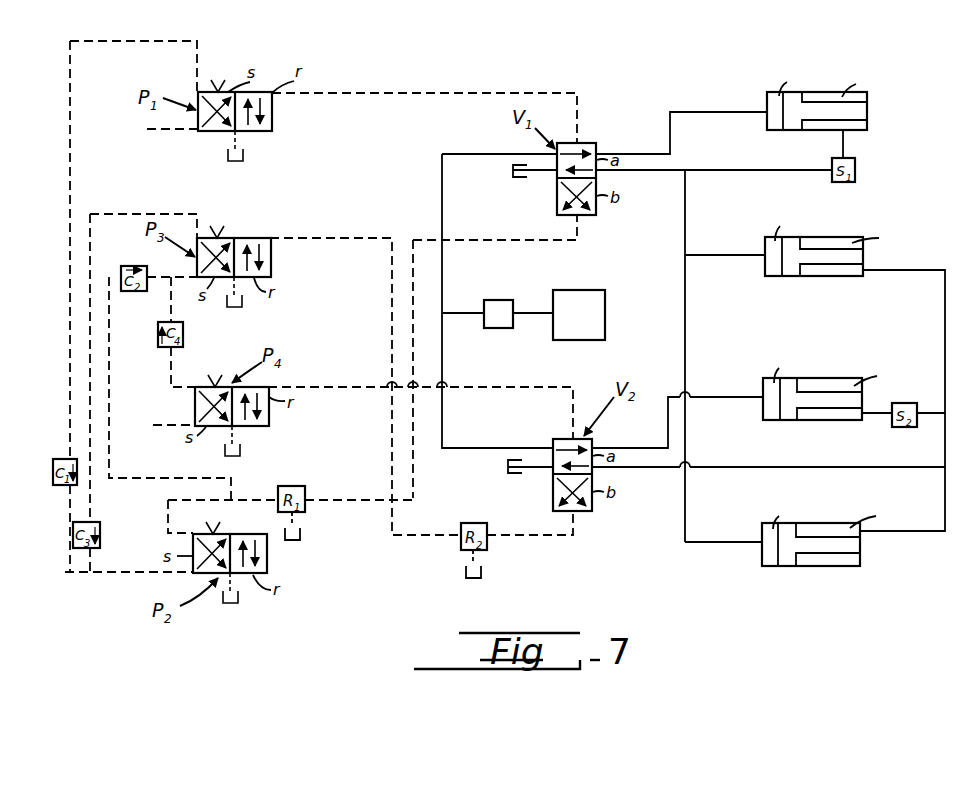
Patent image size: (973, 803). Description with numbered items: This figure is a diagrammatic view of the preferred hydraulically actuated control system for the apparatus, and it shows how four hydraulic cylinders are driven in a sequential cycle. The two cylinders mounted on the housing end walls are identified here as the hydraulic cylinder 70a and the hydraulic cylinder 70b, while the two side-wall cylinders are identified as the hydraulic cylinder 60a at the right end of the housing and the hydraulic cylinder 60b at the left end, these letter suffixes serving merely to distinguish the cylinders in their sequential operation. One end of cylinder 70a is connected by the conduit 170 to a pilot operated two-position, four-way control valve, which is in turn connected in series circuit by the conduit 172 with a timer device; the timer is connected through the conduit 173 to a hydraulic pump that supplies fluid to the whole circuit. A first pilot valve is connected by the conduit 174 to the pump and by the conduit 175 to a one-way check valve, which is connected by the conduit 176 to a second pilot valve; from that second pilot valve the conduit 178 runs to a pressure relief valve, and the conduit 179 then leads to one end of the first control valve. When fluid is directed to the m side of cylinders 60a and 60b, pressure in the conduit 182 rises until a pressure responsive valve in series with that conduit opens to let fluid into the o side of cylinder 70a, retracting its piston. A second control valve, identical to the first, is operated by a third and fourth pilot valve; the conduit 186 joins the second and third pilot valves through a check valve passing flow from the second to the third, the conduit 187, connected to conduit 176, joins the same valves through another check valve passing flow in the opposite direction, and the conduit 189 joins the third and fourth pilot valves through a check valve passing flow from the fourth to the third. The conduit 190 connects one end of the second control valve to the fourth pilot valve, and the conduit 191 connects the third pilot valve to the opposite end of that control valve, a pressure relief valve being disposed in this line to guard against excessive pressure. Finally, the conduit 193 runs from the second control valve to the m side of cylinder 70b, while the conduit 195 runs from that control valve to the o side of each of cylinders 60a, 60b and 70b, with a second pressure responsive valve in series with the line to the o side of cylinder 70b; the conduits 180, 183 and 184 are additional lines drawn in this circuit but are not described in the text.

The conduit 170 is at (711, 110).
The conduit 172 is at (442, 191).
The conduit 173 is at (540, 316).
The conduit 174 is at (160, 132).
The conduit 175 is at (203, 58).
The conduit 176 is at (112, 575).
The conduit 178 is at (259, 498).
The conduit 179 is at (520, 242).
The dashed line from valve P1 to valve V1 180 is at (363, 93).
The conduit 182 is at (676, 175).
The line to cylinder 60b 183 is at (717, 253).
The line to cylinder 60a 184 is at (722, 544).
The conduit 186 is at (109, 372).
The conduit 187 is at (90, 243).
The conduit 189 is at (171, 366).
The conduit 190 is at (335, 386).
The conduit 191 is at (392, 303).
The conduit 193 is at (714, 397).
The conduit 195 is at (943, 447).
The hydraulic cylinder 70a is at (868, 96).
The hydraulic cylinder 60b is at (829, 238).
The hydraulic cylinder 70b is at (829, 378).
The hydraulic cylinder 60a is at (822, 527).